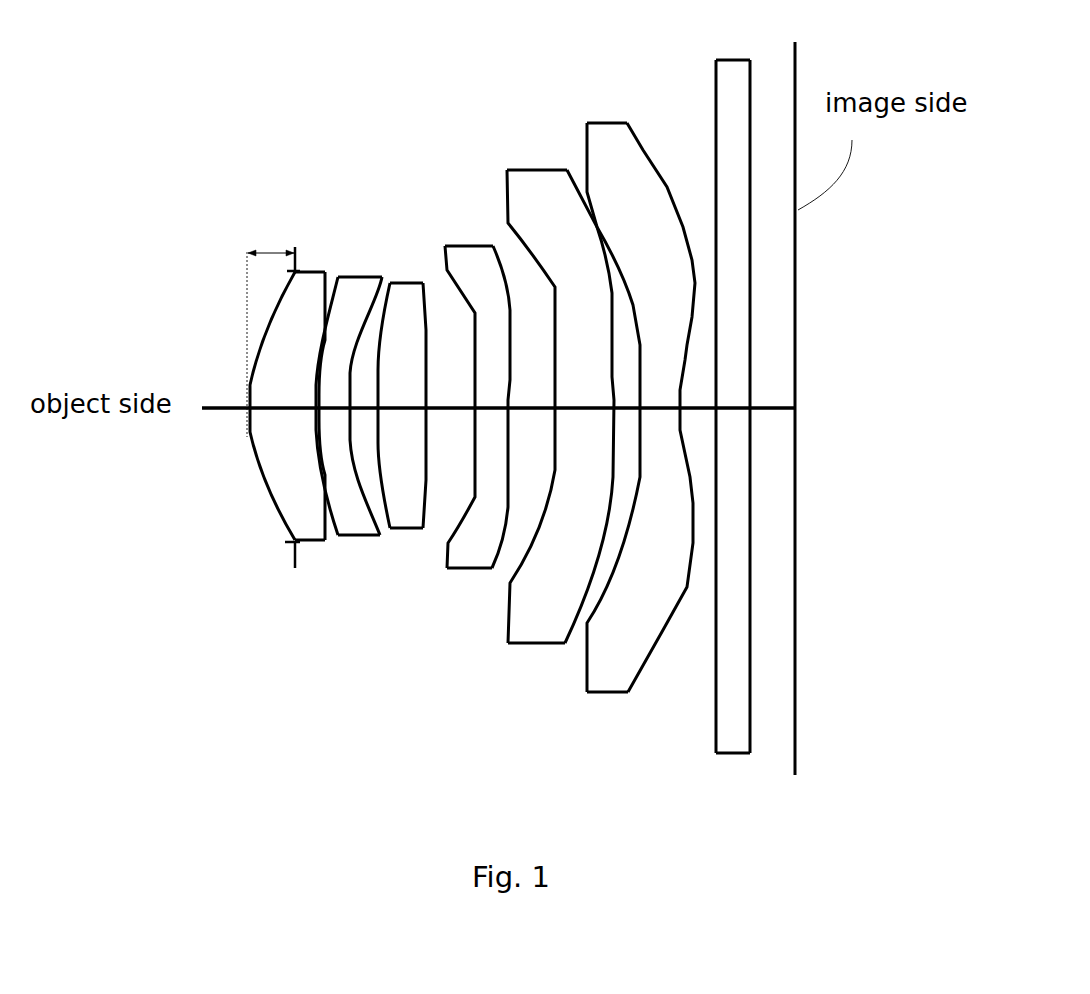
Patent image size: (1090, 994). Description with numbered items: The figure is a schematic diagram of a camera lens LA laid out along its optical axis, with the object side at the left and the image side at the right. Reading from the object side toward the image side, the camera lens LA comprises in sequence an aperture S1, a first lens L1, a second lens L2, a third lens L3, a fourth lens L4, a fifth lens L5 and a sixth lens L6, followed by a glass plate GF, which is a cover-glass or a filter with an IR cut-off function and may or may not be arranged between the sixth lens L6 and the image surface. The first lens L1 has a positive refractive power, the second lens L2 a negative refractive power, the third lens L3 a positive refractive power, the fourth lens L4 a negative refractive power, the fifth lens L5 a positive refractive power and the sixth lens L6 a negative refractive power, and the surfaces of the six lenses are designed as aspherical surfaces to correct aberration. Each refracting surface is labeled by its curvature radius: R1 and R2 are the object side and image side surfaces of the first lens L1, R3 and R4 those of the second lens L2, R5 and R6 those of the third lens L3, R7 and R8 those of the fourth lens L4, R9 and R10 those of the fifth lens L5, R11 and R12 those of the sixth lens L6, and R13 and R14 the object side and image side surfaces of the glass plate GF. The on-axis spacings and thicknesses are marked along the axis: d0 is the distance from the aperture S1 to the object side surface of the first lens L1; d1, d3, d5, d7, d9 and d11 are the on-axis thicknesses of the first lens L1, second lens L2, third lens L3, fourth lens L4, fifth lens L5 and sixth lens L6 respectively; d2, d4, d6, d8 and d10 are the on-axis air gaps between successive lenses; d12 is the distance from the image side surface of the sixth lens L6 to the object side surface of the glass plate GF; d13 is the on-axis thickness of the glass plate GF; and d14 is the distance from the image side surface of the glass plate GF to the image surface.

The camera lens LA is at (278, 118).
The aperture S1 is at (292, 246).
The first lens L1 is at (252, 406).
The second lens L2 is at (322, 443).
The third lens L3 is at (384, 475).
The fourth lens L4 is at (459, 490).
The fifth lens L5 is at (546, 467).
The sixth lens L6 is at (624, 469).
The glass plate GF is at (705, 447).
The curvature radius of the object side surface of the first lens R1 is at (245, 414).
The curvature radius of the image side surface of the first lens R2 is at (314, 420).
The curvature radius of the object side surface of the second lens R3 is at (318, 475).
The curvature radius of the image side surface of the second lens R4 is at (348, 447).
The curvature radius of the object side surface of the third lens R5 is at (377, 453).
The curvature radius of the image side surface of the third lens R6 is at (421, 447).
The curvature radius of the object side surface of the fourth lens R7 is at (475, 437).
The curvature radius of the image side surface of the fourth lens R8 is at (508, 438).
The curvature radius of the object side surface of the fifth lens R9 is at (552, 460).
The curvature radius of the image side surface of the fifth lens R10 is at (613, 453).
The curvature radius of the object side surface of the sixth lens R11 is at (640, 470).
The curvature radius of the image side surface of the sixth lens R12 is at (693, 480).
The curvature radius of the object side surface of the glass plate R13 is at (714, 587).
The curvature radius of the image side surface of the glass plate R14 is at (748, 613).
The distance on-axis from aperture to object side surface of the first lens d0 is at (270, 336).
The thickness on-axis of the first lens d1 is at (284, 399).
The distance on-axis from the first lens to the second lens d2 is at (318, 412).
The thickness on-axis of the second lens d3 is at (334, 399).
The distance on-axis from the second lens to the third lens d4 is at (364, 399).
The thickness on-axis of the third lens d5 is at (402, 399).
The distance on-axis from the third lens to the fourth lens d6 is at (450, 399).
The thickness on-axis of the fourth lens d7 is at (491, 399).
The distance on-axis from the fourth lens to the fifth lens d8 is at (531, 399).
The thickness on-axis of the fifth lens d9 is at (584, 399).
The distance on-axis from the fifth lens to the sixth lens d10 is at (618, 406).
The thickness on-axis of the sixth lens d11 is at (660, 399).
The distance on-axis from the sixth lens to the optical filter d12 is at (698, 399).
The thickness on-axis of the optical filter d13 is at (733, 397).
The distance on-axis from the optical filter to the image surface d14 is at (772, 399).